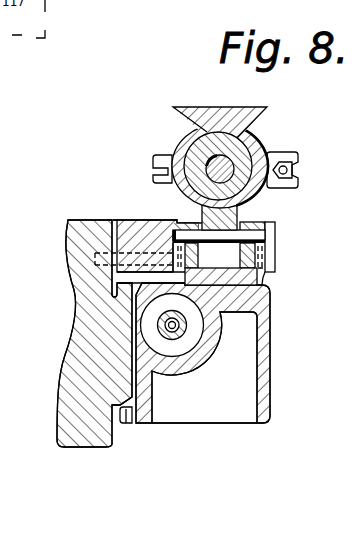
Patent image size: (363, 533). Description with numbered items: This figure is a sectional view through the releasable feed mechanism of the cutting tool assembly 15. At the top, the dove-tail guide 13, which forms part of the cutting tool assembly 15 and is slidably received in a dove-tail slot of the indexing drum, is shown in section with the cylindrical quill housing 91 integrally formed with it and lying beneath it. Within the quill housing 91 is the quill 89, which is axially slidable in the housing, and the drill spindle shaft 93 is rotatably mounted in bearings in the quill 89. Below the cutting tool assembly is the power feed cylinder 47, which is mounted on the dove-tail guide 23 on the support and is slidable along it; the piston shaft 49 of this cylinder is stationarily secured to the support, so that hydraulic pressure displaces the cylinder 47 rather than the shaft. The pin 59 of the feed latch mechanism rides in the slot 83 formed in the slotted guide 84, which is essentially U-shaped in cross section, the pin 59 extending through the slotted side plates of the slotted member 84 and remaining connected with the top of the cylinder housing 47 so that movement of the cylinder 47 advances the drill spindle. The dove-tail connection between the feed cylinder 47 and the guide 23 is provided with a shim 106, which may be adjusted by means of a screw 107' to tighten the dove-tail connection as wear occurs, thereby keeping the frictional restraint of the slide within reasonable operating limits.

The dove-tail guide 13 is at (264, 109).
The cutting tool assembly 15 is at (182, 107).
The dove-tail guide 23 is at (125, 350).
The power cylinder 47 is at (216, 322).
The piston shaft 49 is at (185, 322).
The pin 59 is at (282, 229).
The slot 83 is at (262, 226).
The slotted guide 84 is at (275, 276).
The quill 89 is at (178, 186).
The quill housing 91 is at (271, 140).
The shaft 93 is at (206, 160).
The shim 106 is at (92, 425).
The screw 107' is at (150, 430).